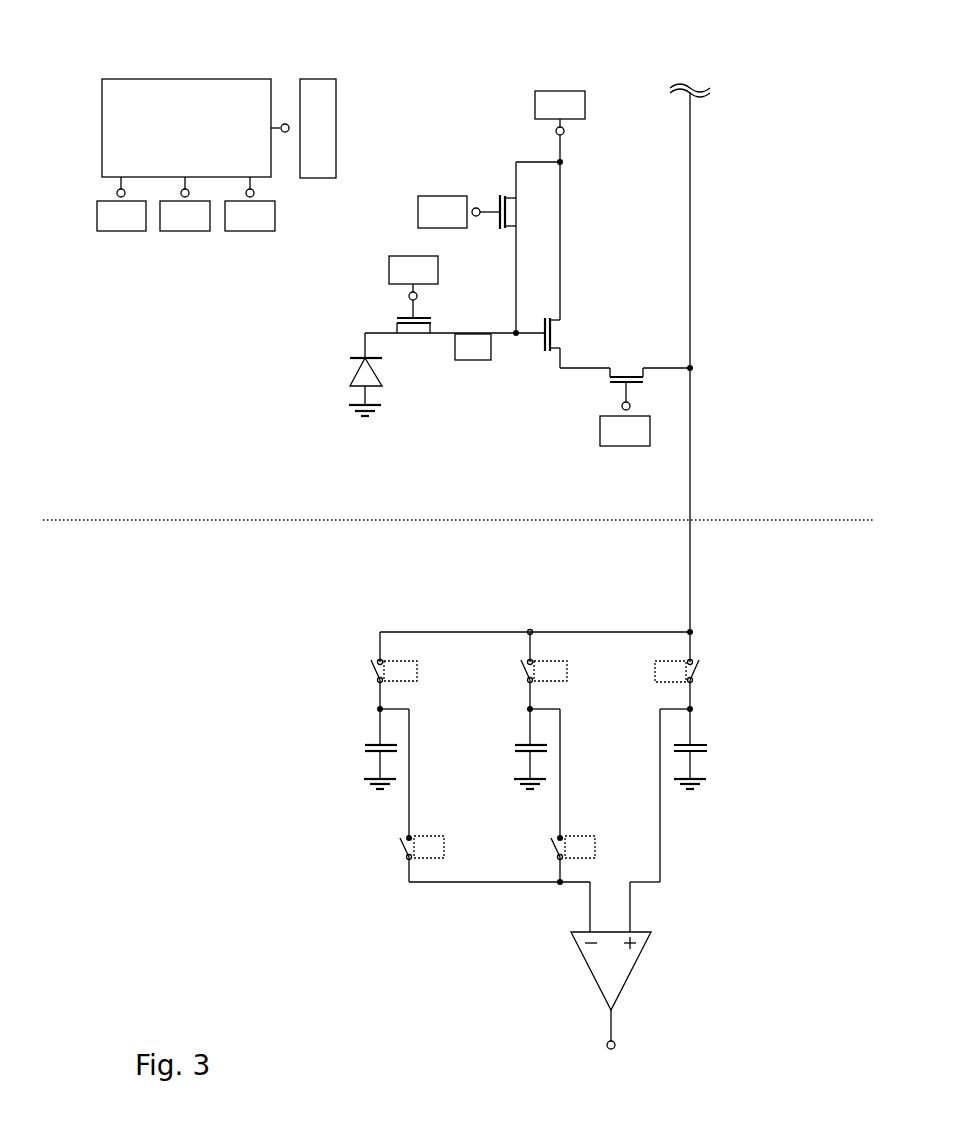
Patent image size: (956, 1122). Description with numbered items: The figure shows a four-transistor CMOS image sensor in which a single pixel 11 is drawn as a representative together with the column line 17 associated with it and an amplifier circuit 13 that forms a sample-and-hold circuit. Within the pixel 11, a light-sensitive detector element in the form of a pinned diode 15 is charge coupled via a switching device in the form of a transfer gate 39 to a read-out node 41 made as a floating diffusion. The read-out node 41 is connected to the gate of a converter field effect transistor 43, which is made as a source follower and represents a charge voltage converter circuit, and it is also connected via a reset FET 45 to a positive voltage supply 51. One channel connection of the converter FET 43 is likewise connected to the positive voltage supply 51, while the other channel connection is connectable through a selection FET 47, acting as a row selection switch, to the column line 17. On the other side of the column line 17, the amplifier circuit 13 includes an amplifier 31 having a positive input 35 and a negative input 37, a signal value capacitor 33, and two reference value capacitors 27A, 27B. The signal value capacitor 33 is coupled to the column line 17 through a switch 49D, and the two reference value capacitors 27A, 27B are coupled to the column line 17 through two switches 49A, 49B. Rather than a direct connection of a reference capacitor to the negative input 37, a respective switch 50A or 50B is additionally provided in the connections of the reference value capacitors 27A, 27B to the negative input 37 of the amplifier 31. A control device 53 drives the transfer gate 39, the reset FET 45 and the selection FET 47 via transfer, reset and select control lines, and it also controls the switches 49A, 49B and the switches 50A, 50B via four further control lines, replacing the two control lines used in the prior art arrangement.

The pixel 11 is at (244, 328).
The amplifier circuit 13 is at (177, 807).
The pinned diode 15 is at (347, 372).
The column line 17 is at (696, 212).
The reference value capacitor 27A is at (524, 758).
The reference value capacitor 27B is at (359, 748).
The amplifier 31 is at (641, 968).
The signal value capacitor 33 is at (713, 748).
The positive input 35 is at (637, 923).
The negative input 37 is at (585, 925).
The transfer gate 39 is at (414, 337).
The read-out node 41 is at (475, 327).
The converter field effect transistor 43 is at (563, 329).
The reset FET 45 is at (495, 191).
The selection FET 47 is at (631, 369).
The switch 49A is at (519, 678).
The switch 49B is at (365, 672).
The switch 49D is at (707, 672).
The switch 50A is at (549, 852).
The switch 50B is at (397, 848).
The positive voltage supply 51 is at (558, 89).
The control device 53 is at (191, 77).